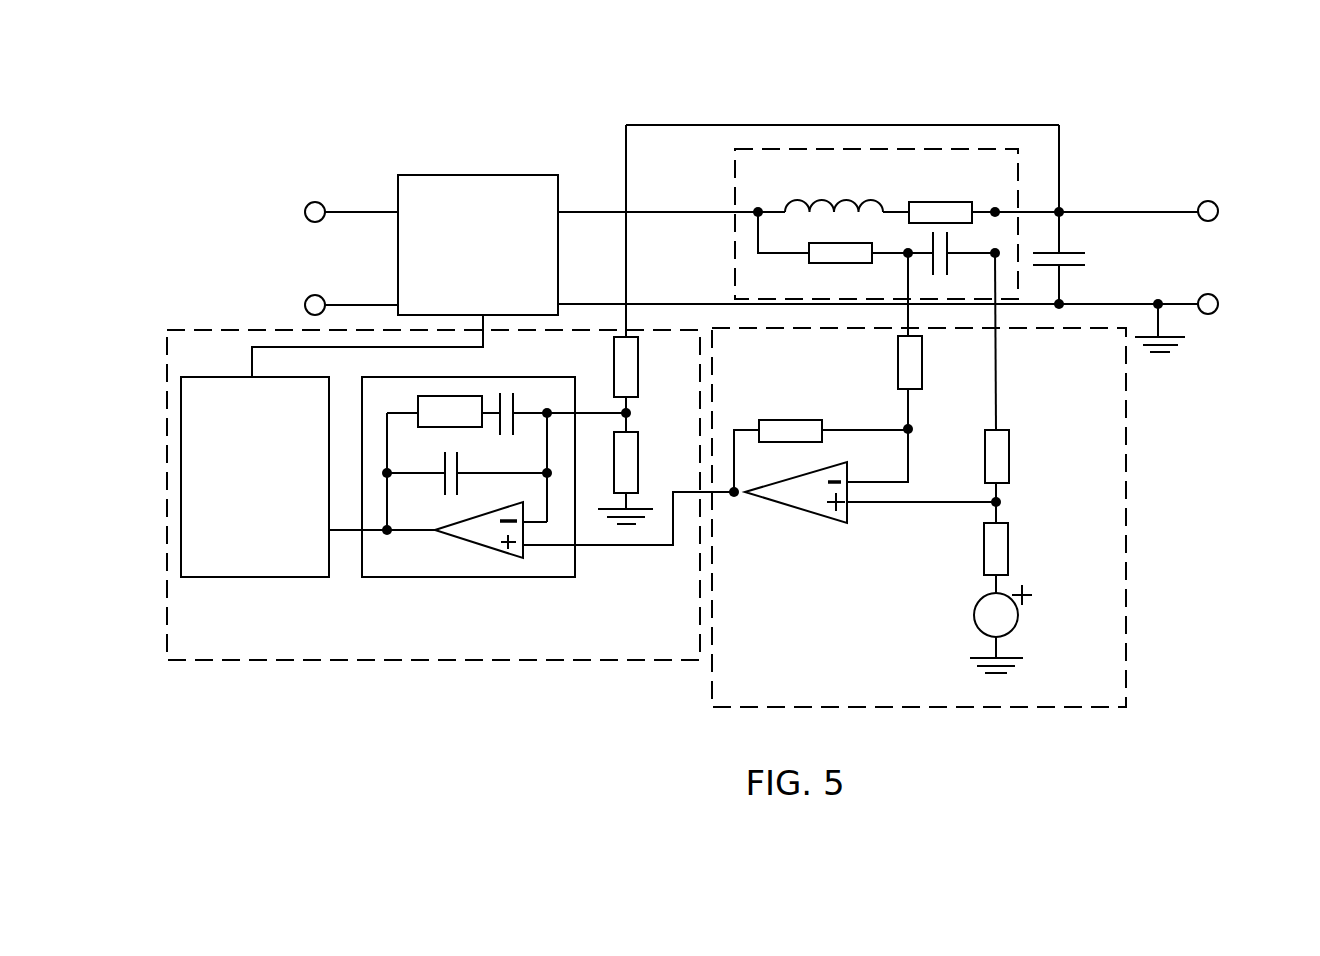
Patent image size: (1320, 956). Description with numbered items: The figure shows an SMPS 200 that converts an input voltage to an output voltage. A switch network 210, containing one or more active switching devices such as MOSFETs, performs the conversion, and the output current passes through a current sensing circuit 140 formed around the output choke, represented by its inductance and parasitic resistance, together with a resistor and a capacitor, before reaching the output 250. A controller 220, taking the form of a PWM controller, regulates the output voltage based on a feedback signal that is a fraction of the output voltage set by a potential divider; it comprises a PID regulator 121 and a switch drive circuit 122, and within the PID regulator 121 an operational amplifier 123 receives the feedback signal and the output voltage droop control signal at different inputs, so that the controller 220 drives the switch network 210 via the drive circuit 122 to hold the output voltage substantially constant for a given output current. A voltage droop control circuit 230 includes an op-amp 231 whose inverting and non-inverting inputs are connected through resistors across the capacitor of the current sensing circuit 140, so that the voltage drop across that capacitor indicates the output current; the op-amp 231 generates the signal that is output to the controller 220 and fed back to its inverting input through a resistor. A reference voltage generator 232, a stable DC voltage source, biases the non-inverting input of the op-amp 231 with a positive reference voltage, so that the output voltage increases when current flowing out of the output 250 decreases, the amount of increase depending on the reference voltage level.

The SMPS 200 is at (296, 143).
The switch network 210 is at (437, 175).
The current sensing circuit 140 is at (735, 233).
The output 250 is at (1200, 201).
The controller 220 is at (410, 660).
The switch drive circuit 122 is at (255, 578).
The PID regulator 121 is at (455, 578).
The operational amplifier 123 is at (467, 544).
The voltage droop control circuit 230 is at (1126, 518).
The op-amp 231 is at (797, 508).
The reference voltage generator 232 is at (972, 615).